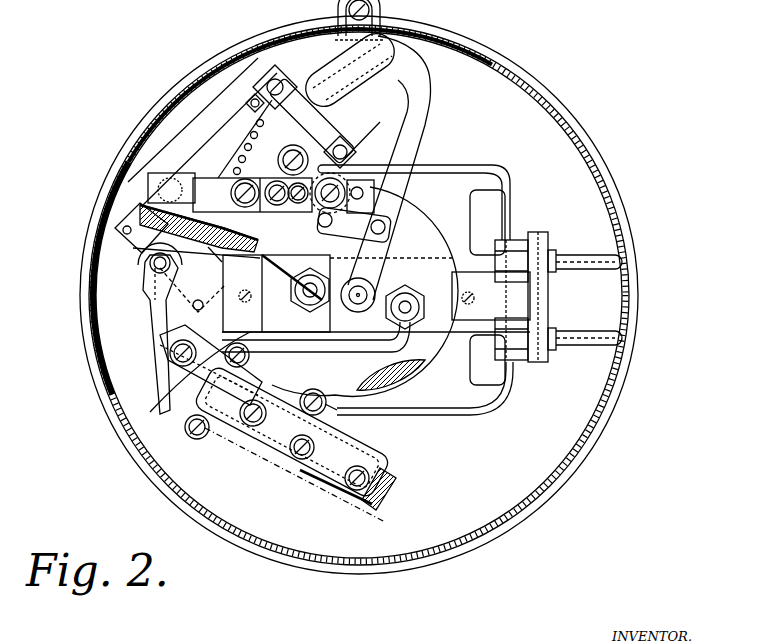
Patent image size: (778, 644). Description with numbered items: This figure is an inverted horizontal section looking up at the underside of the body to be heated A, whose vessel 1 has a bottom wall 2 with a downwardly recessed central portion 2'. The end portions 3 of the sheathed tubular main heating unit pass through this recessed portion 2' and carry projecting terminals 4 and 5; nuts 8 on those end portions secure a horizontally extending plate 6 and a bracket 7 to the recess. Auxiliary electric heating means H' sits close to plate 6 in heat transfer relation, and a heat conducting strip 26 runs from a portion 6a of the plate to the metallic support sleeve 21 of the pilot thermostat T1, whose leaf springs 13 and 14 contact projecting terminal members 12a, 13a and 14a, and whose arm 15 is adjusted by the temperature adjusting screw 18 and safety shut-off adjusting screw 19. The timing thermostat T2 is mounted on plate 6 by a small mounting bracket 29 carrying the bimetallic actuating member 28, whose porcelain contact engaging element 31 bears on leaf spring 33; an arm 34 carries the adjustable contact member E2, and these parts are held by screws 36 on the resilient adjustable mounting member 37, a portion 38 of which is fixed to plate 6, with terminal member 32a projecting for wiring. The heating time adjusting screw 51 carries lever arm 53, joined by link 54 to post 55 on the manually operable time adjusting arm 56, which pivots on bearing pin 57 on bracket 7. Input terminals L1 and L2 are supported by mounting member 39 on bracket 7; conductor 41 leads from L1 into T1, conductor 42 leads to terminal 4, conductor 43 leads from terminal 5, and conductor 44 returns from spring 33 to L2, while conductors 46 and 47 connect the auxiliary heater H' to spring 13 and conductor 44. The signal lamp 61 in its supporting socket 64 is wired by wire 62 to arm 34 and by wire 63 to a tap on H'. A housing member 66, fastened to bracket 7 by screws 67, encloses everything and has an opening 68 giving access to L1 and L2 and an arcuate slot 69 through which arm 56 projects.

The vessel 1 is at (558, 104).
The bottom wall 2 is at (359, 295).
The downwardly recessed central portion 2' is at (393, 375).
The end portions 3 is at (292, 290).
The terminal 4 is at (150, 188).
The terminal 5 is at (283, 38).
The horizontally extending plate 6 is at (238, 98).
The portion of the plate 6a is at (182, 322).
The bracket 7 is at (430, 256).
The nuts 8 is at (312, 298).
The projecting terminal member 12a is at (284, 392).
The leaf spring 13 is at (343, 495).
The projecting terminal member 13a is at (212, 438).
The leaf spring 14 is at (356, 503).
The projecting terminal member 14a is at (240, 377).
The arm 15 is at (334, 488).
The temperature adjusting screw 18 is at (272, 448).
The safety shut-off adjusting screw 19 is at (370, 470).
The metallic support sleeve 21 is at (245, 440).
The heat conducting strip 26 is at (175, 405).
The bimetallic actuating member 28 is at (222, 128).
The mounting bracket 29 is at (238, 108).
The contact engaging element 31 is at (167, 185).
The projecting terminal member 32a is at (258, 230).
The leaf spring 33 is at (110, 200).
The arm 34 is at (196, 231).
The screws 36 is at (270, 182).
The adjustable mounting member 37 is at (337, 206).
The portion of mounting member 38 is at (400, 195).
The mounting member 39 is at (540, 234).
The conductor 41 is at (333, 414).
The conductor 42 is at (280, 346).
The conductor 43 is at (376, 293).
The conductor 44 is at (510, 238).
The conductor 46 is at (163, 378).
The conductor 47 is at (330, 118).
The heating time adjusting screw 51 is at (364, 150).
The lever arm 53 is at (350, 236).
The link 54 is at (388, 248).
The post 55 is at (386, 226).
The time adjusting arm 56 is at (418, 118).
The bearing pin 57 is at (366, 283).
The electric lamp 61 is at (372, 78).
The wire 62 is at (243, 155).
The wire 63 is at (262, 128).
The supporting socket 64 is at (296, 86).
The housing member 66 is at (592, 433).
The screws 67 is at (475, 298).
The opening 68 is at (618, 232).
The arcuate slot 69 is at (393, 24).
The body to be heated A is at (598, 137).
The contact member E2 is at (230, 192).
The auxiliary electric heating means H' is at (192, 279).
The input terminal L1 is at (573, 336).
The input terminal L2 is at (575, 262).
The pilot thermostat T1 is at (300, 486).
The timing thermostat T2 is at (228, 173).